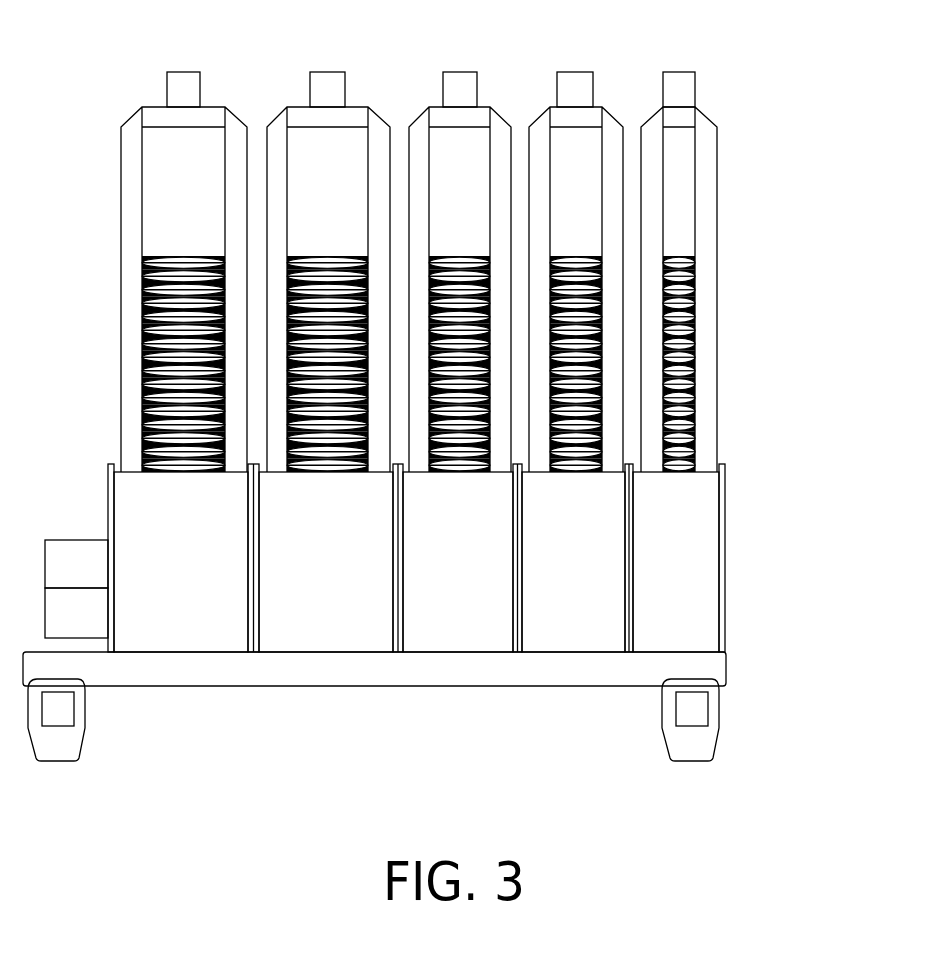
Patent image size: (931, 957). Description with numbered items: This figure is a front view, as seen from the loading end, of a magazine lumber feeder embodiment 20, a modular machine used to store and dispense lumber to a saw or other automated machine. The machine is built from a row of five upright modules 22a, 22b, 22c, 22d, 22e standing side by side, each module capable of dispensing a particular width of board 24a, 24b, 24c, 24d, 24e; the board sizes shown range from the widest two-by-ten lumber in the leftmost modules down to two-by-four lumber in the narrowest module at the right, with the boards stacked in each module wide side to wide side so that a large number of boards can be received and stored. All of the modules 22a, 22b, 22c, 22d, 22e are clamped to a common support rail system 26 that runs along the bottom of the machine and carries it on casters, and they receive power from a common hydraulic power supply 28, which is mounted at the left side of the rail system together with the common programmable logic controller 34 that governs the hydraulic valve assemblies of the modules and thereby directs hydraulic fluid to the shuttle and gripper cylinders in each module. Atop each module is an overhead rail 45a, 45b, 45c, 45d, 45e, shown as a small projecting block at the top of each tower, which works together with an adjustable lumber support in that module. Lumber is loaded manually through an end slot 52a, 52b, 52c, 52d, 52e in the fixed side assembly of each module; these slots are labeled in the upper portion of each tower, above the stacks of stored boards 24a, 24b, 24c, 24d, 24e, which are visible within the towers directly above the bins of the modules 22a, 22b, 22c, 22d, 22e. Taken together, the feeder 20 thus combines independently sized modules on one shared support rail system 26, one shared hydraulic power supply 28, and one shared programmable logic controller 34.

The magazine lumber feeder embodiment 20 is at (782, 184).
The module 22a is at (130, 106).
The module 22b is at (271, 108).
The module 22c is at (411, 108).
The module 22d is at (533, 108).
The module 22e is at (646, 109).
The board 24a is at (143, 460).
The board 24b is at (333, 473).
The board 24c is at (458, 473).
The board 24d is at (587, 473).
The board 24e is at (690, 473).
The common support rail system 26 is at (715, 670).
The common hydraulic power supply 28 is at (76, 564).
The programmable logic controller 34 is at (76, 613).
The overhead rail 45a is at (174, 72).
The overhead rail 45b is at (327, 72).
The overhead rail 45c is at (453, 72).
The overhead rail 45d is at (572, 72).
The overhead rail 45e is at (679, 72).
The end slot 52a is at (207, 220).
The end slot 52b is at (303, 220).
The end slot 52c is at (437, 220).
The end slot 52d is at (553, 220).
The end slot 52e is at (663, 220).